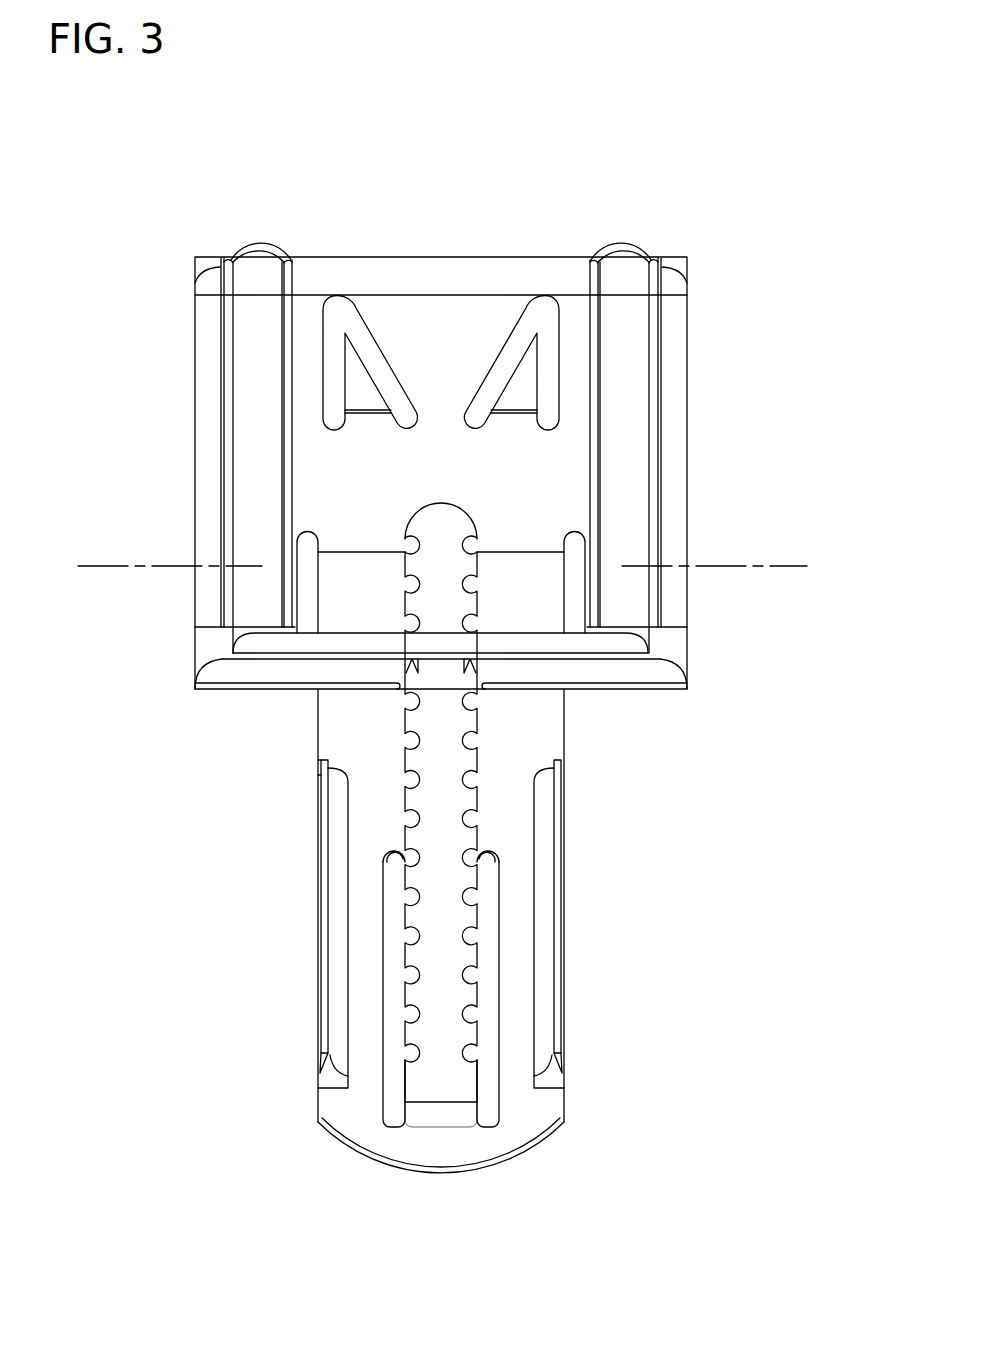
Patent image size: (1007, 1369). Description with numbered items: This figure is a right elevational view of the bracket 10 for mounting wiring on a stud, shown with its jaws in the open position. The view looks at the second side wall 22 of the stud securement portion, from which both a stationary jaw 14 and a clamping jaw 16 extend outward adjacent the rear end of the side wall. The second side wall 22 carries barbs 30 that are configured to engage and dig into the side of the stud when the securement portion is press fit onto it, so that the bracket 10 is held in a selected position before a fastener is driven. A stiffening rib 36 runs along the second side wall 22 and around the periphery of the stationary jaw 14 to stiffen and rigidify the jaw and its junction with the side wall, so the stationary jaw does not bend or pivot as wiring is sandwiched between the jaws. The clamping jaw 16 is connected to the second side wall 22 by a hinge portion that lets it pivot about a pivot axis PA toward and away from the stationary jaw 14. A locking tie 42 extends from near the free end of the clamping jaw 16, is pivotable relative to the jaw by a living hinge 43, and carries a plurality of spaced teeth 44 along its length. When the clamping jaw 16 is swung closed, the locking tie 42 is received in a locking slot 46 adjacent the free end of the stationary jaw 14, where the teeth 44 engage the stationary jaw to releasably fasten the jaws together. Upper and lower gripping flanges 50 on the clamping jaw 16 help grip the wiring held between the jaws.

The bracket 10 is at (655, 218).
The stationary jaw 14 is at (690, 539).
The clamping jaw 16 is at (569, 1105).
The second side wall 22 is at (530, 480).
The barbs 30 is at (357, 377).
The stiffening rib 36 is at (255, 496).
The locking tie 42 is at (440, 763).
The living hinge 43 is at (440, 1112).
The teeth 44 is at (385, 853).
The locking slot 46 is at (477, 683).
The gripping flanges 50 is at (323, 975).
The pivot axis PA is at (777, 567).